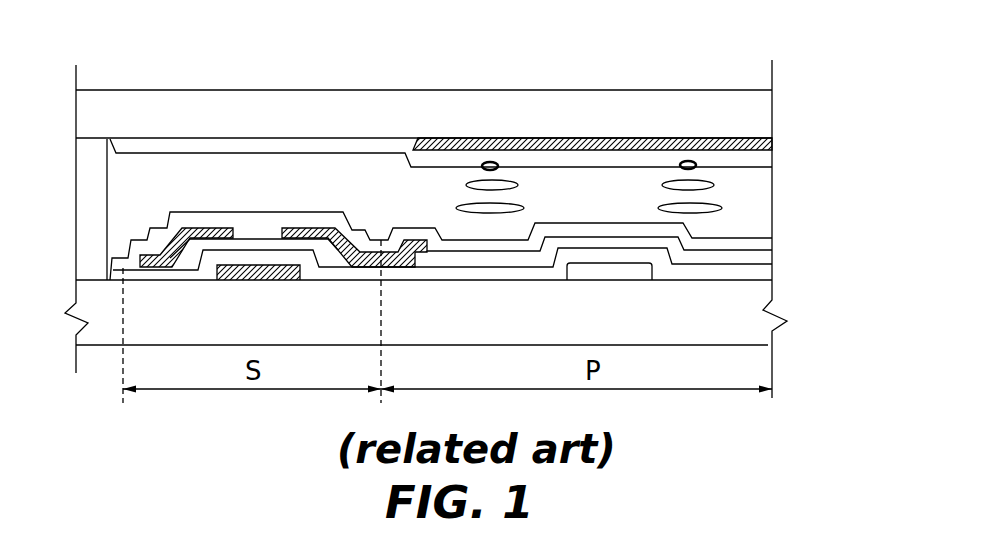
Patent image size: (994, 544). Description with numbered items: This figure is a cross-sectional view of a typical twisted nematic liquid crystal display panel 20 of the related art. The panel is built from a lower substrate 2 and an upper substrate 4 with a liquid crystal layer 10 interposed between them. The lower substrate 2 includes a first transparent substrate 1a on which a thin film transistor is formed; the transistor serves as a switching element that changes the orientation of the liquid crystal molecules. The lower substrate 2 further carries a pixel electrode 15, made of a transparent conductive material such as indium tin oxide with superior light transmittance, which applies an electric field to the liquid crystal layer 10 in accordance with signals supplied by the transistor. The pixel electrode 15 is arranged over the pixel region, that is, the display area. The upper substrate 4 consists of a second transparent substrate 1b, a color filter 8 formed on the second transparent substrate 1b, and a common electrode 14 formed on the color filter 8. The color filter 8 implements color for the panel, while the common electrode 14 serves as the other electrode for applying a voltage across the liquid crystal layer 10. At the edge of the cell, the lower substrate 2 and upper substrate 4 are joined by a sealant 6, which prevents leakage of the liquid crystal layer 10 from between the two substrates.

The liquid crystal display device 20 is at (250, 79).
The second transparent substrate 1b is at (480, 108).
The upper substrate 4 is at (783, 87).
The color filter 8 is at (633, 140).
The common electrode 14 is at (742, 156).
The sealant 6 is at (84, 209).
The liquid crystal layer 10 is at (783, 160).
The pixel electrode 15 is at (777, 253).
The lower substrate 2 is at (788, 237).
The first transparent substrate 1a is at (743, 333).